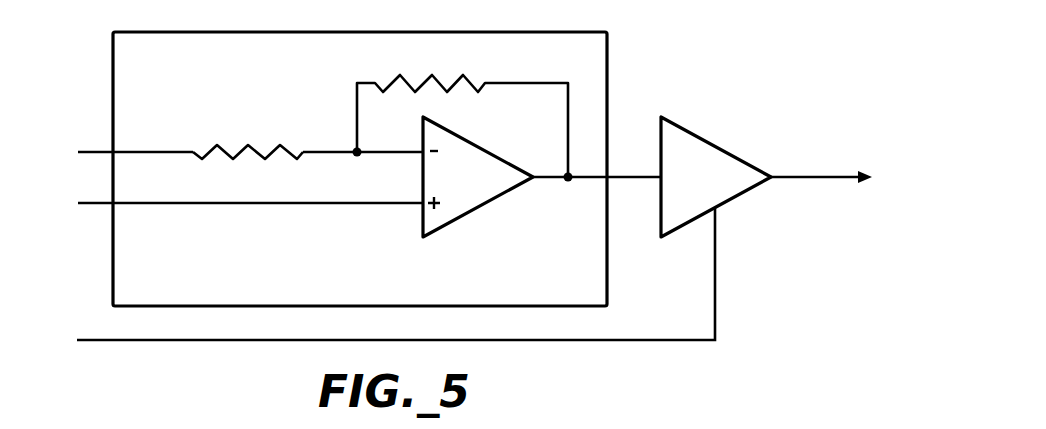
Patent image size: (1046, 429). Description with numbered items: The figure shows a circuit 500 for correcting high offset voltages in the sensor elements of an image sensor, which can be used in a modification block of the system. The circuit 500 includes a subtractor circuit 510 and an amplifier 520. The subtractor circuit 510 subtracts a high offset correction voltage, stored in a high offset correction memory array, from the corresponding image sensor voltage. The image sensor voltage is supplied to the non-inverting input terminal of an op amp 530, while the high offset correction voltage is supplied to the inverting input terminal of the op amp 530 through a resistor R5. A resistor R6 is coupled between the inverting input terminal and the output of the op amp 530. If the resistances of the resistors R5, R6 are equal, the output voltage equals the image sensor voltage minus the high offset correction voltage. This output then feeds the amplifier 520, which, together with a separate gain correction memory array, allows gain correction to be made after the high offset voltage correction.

The circuit 500 is at (650, 54).
The subtractor circuit 510 is at (591, 265).
The amplifier 520 is at (716, 177).
The op amp 530 is at (478, 177).
The resistor R5 is at (463, 115).
The resistor R6 is at (248, 139).